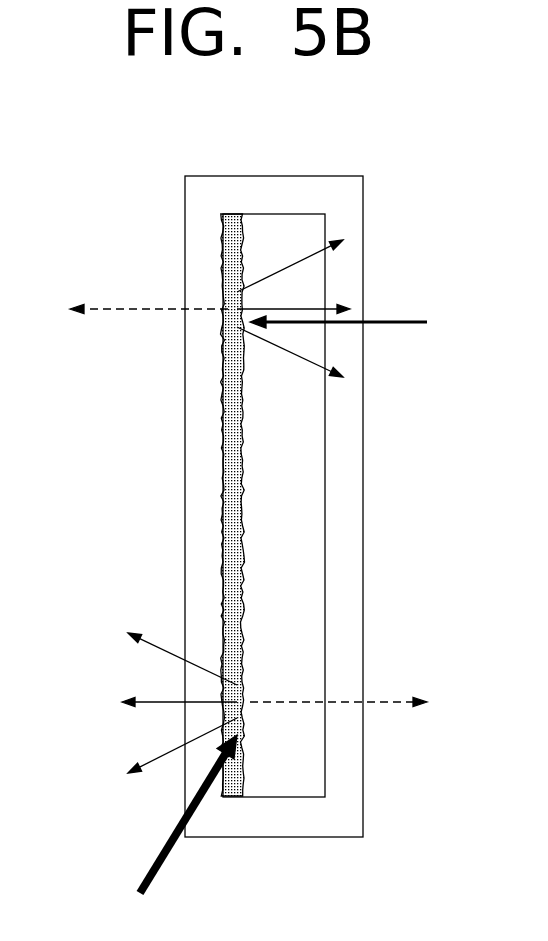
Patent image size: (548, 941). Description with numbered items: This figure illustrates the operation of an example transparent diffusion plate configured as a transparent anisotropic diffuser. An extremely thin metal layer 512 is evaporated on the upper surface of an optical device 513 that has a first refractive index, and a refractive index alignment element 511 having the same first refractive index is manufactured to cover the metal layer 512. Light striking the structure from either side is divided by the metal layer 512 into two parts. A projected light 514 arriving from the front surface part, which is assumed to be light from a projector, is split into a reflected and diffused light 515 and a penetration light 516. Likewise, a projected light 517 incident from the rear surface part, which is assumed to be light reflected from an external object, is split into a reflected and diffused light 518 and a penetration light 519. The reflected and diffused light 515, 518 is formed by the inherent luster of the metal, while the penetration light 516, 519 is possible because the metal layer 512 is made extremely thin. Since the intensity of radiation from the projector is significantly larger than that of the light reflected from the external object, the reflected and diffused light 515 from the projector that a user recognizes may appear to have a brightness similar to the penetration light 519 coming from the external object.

The refractive index alignment element 511 is at (342, 176).
The metal layer 512 is at (230, 248).
The optical device 513 is at (286, 245).
The projected light 514 is at (160, 870).
The reflected and diffused light 515 is at (165, 647).
The penetration light 516 is at (396, 700).
The projected light 517 is at (403, 320).
The reflected and diffused light 518 is at (288, 348).
The penetration light 519 is at (110, 300).